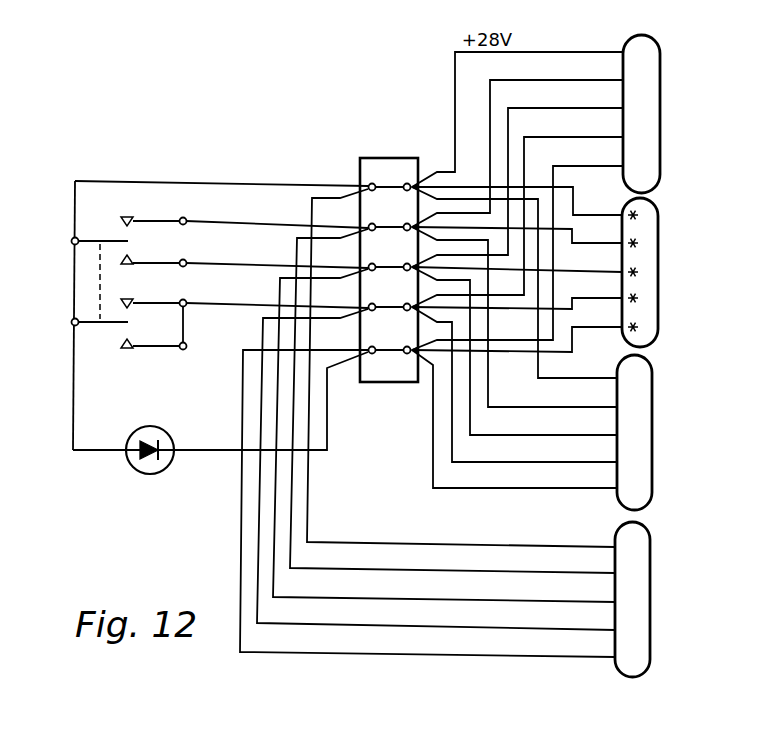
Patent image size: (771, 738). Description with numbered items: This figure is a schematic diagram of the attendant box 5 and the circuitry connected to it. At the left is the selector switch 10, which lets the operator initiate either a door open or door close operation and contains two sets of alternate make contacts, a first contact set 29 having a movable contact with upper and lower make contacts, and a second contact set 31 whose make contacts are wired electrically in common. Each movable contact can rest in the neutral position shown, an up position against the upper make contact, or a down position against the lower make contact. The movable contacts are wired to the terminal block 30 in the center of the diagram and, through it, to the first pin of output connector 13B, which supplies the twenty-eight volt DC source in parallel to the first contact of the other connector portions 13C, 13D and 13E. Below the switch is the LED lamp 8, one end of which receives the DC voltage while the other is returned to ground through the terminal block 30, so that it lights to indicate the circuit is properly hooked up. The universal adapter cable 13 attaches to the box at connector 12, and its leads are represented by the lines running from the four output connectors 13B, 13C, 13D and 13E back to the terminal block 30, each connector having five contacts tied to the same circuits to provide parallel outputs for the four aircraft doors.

The attendant box 5 is at (195, 169).
The LED lamp 8 is at (154, 426).
The selector switch 10 is at (70, 323).
The connector 12 is at (662, 354).
The universal adapter cable 13 is at (594, 663).
The output connector 13B is at (659, 190).
The output connector 13C is at (653, 346).
The output connector 13D is at (649, 510).
The output connector 13E is at (647, 678).
The first contact set 29 is at (118, 229).
The terminal block 30 is at (405, 158).
The second contact set 31 is at (122, 329).